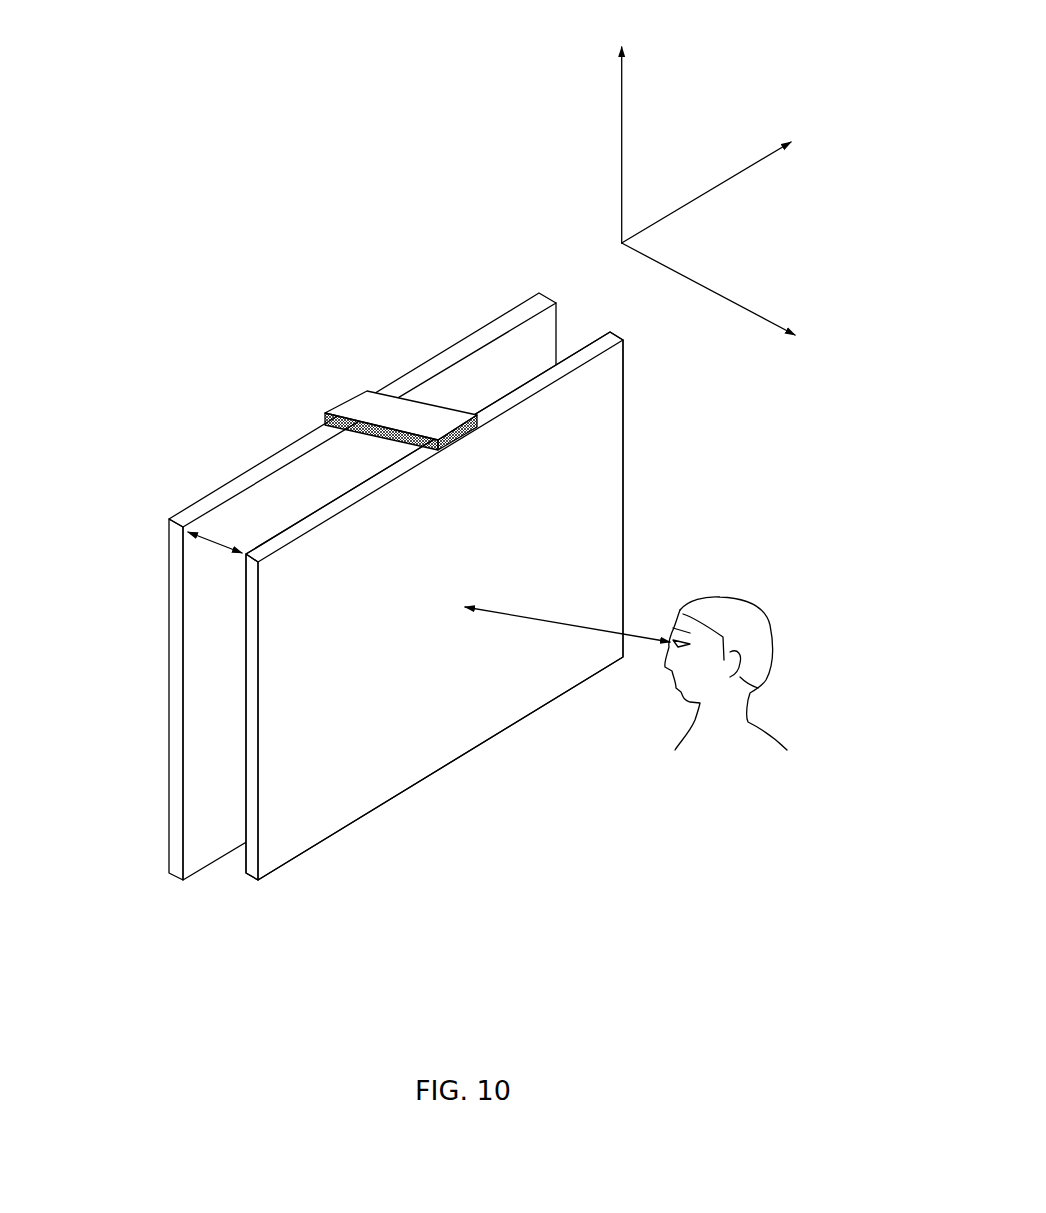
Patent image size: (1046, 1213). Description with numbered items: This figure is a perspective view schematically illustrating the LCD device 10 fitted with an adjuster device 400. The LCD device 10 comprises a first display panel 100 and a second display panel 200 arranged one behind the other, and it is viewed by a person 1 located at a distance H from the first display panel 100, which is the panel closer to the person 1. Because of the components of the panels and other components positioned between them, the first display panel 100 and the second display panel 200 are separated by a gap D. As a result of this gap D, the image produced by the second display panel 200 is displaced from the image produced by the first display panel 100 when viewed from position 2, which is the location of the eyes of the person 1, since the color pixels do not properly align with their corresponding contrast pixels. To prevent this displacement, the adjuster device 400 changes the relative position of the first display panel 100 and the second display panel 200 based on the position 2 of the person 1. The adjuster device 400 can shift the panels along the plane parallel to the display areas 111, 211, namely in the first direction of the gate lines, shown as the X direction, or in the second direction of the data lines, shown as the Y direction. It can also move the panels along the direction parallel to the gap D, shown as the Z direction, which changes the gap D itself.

The LCD device 10 is at (352, 665).
The first display panel 100 is at (352, 625).
The display area 111 is at (353, 735).
The second display panel 200 is at (319, 586).
The display area 211 is at (225, 717).
The adjuster device 400 is at (363, 407).
The person 1 is at (752, 641).
The position 2 is at (668, 635).
The gap D is at (218, 538).
The distance H is at (557, 623).
The X direction X is at (716, 184).
The Y direction Y is at (719, 300).
The Z direction Z is at (621, 130).